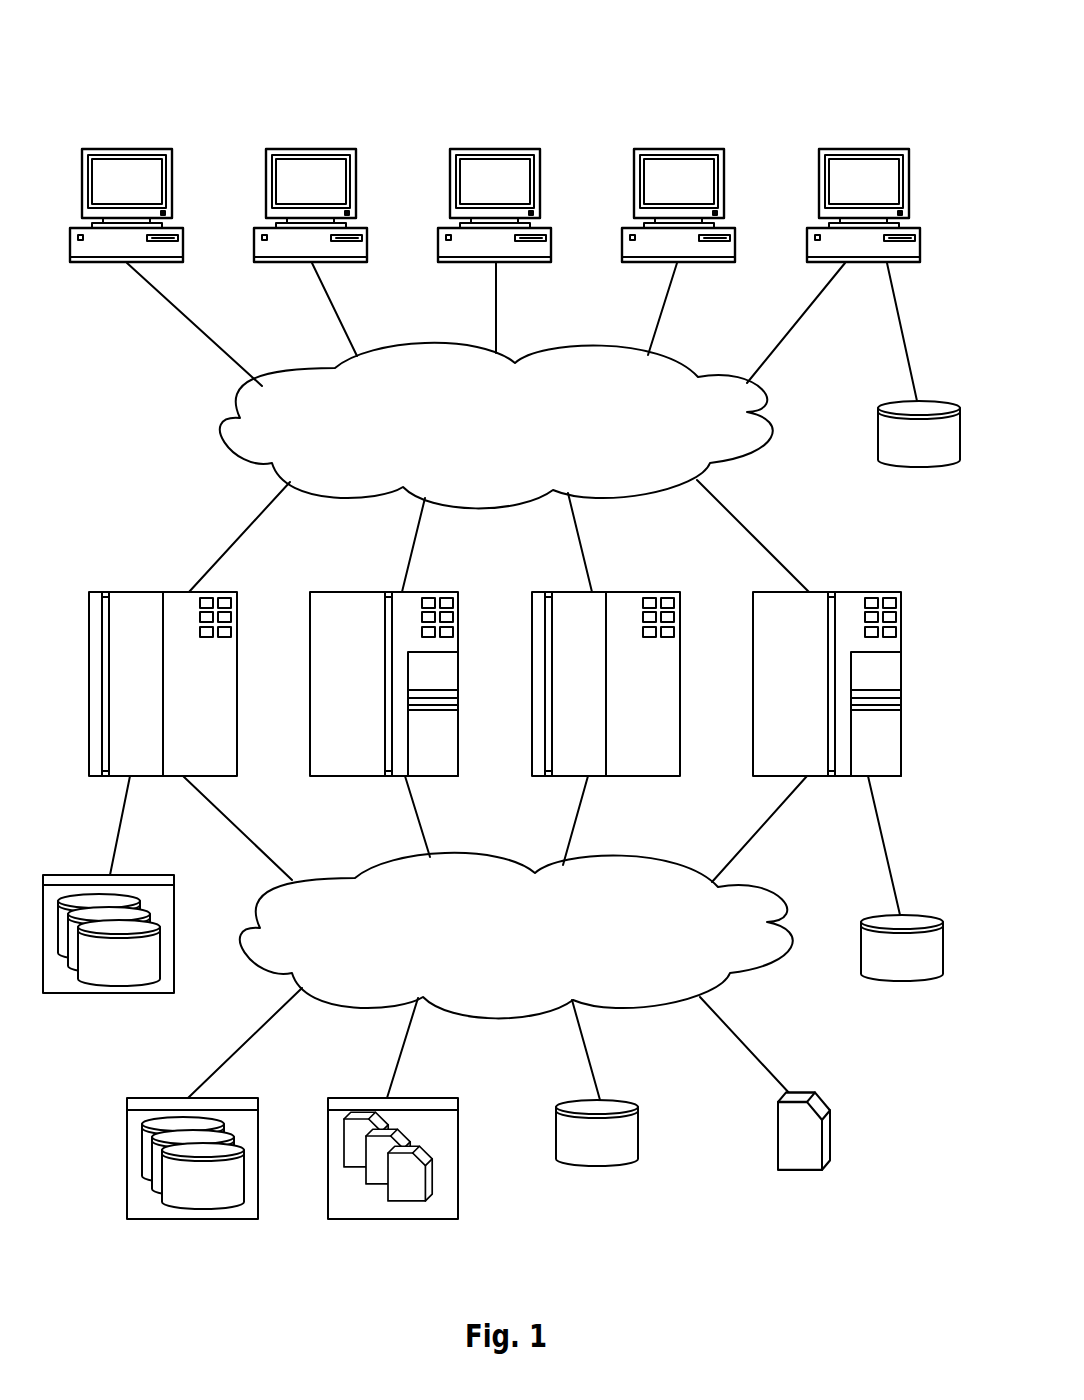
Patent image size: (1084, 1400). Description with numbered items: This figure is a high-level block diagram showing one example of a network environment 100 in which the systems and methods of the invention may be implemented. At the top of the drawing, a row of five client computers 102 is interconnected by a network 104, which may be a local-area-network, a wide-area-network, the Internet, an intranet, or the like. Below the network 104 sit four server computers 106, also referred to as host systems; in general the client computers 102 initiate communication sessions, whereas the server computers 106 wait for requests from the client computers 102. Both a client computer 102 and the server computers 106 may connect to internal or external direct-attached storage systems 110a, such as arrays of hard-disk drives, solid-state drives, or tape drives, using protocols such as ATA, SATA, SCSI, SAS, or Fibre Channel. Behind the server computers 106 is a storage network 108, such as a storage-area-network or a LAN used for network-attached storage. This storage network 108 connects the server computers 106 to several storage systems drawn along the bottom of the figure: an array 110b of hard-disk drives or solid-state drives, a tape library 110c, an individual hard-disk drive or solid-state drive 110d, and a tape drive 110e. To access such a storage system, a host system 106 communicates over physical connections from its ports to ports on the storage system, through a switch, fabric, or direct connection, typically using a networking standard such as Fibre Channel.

The network environment 100 is at (201, 71).
The client computer 102 is at (110, 192).
The network 104 is at (478, 451).
The server computer 106 is at (118, 691).
The storage network 108 is at (496, 961).
The direct-attached storage system 110a is at (920, 467).
The array of hard-disk drives or solid-state drives 110b is at (192, 1219).
The tape library 110c is at (392, 1219).
The individual hard-disk drive or solid-state drive 110d is at (595, 1165).
The tape drive 110e is at (807, 1170).